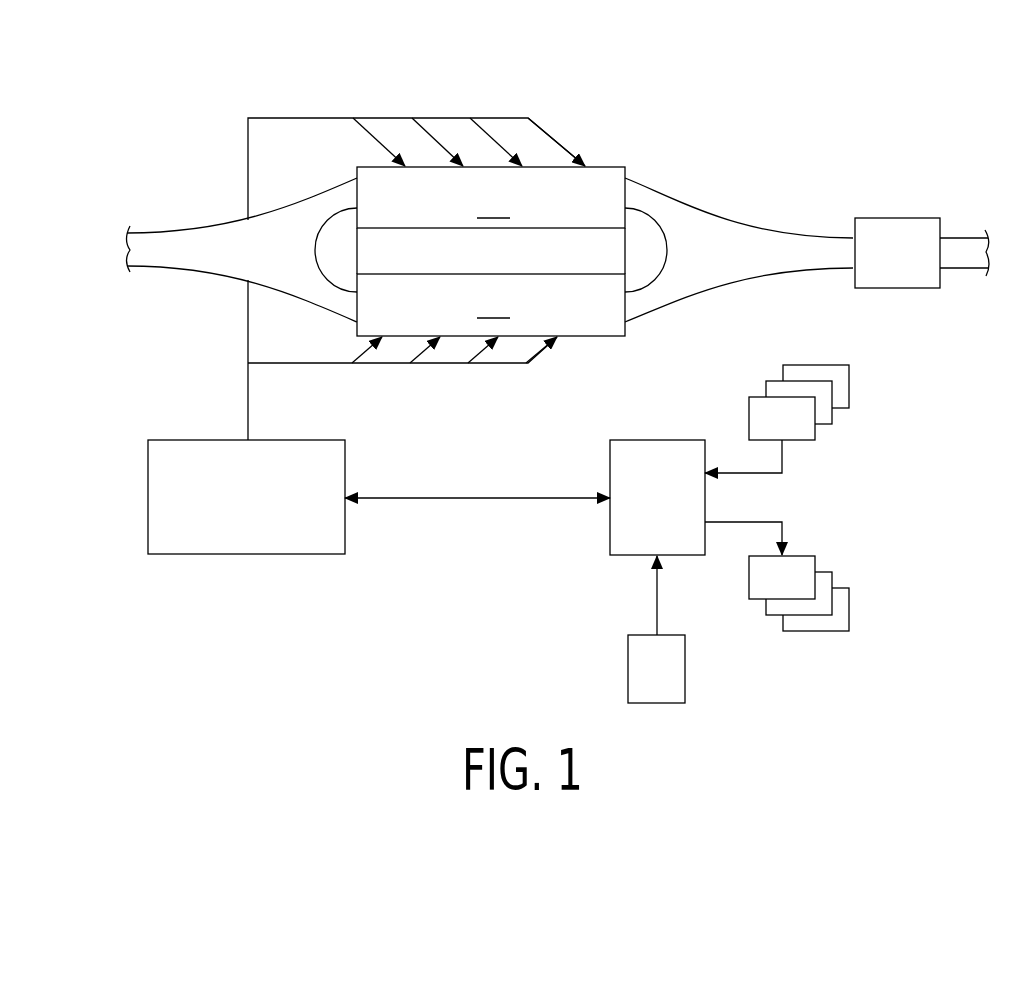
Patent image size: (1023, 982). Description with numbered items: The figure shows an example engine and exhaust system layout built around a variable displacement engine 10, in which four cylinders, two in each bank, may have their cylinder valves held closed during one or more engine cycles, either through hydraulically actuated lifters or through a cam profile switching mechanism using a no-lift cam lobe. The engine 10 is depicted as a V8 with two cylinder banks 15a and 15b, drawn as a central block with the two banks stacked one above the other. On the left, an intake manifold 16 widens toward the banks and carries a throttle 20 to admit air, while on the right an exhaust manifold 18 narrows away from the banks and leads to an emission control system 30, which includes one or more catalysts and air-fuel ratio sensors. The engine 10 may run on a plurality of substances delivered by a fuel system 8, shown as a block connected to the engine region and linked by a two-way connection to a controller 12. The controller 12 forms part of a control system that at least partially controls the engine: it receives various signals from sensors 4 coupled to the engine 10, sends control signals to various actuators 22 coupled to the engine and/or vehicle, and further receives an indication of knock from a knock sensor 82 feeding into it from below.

The variable displacement engine 10 is at (630, 132).
The first cylinder bank 15a is at (491, 197).
The second cylinder bank 15b is at (491, 305).
The intake manifold 16 is at (228, 225).
The exhaust manifold 18 is at (693, 223).
The throttle 20 is at (206, 245).
The emission control system 30 is at (898, 217).
The fuel system 8 is at (246, 555).
The controller 12 is at (632, 557).
The sensors 4 is at (849, 383).
The actuators 22 is at (849, 608).
The knock sensor 82 is at (685, 672).